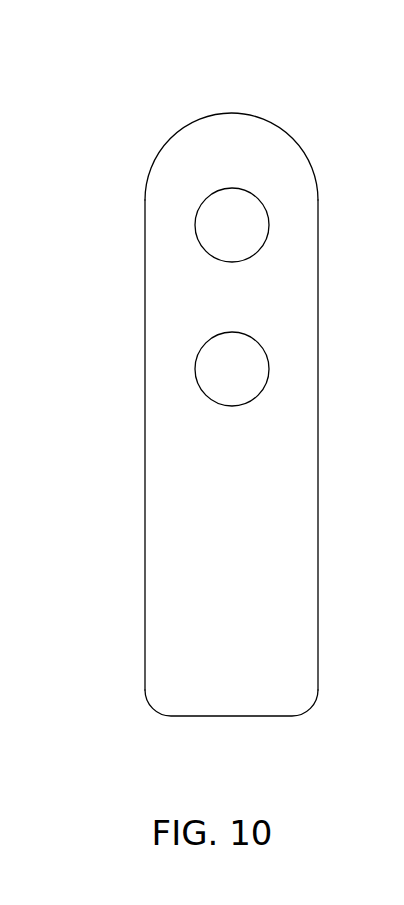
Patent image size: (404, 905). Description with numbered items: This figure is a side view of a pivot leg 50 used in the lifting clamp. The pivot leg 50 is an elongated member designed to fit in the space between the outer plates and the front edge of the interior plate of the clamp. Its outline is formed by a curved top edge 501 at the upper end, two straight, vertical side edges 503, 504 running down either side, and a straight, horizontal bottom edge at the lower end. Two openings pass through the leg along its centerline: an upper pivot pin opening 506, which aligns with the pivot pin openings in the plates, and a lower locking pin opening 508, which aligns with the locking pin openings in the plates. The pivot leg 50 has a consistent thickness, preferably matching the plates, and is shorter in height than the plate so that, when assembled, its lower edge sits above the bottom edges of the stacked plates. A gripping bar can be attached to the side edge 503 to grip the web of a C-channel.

The pivot leg 50 is at (208, 405).
The curved top edge 501 is at (233, 113).
The side edge 503 is at (318, 558).
The side edge 504 is at (145, 495).
The pivot pin opening 506 is at (265, 207).
The locking pin opening 508 is at (266, 353).